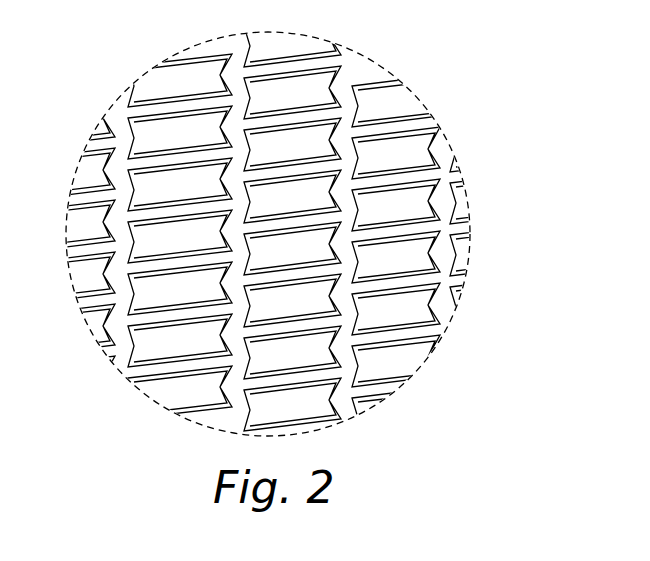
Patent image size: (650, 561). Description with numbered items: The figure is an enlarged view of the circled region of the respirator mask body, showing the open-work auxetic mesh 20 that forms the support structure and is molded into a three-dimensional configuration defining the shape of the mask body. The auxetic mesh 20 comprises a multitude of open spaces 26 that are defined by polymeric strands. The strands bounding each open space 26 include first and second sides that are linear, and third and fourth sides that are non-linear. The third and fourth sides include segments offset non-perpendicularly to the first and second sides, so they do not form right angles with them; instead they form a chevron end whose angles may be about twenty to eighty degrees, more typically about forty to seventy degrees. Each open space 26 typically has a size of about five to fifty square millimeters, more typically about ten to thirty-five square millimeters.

The auxetic mesh 20 is at (456, 184).
The open space 26 is at (298, 206).